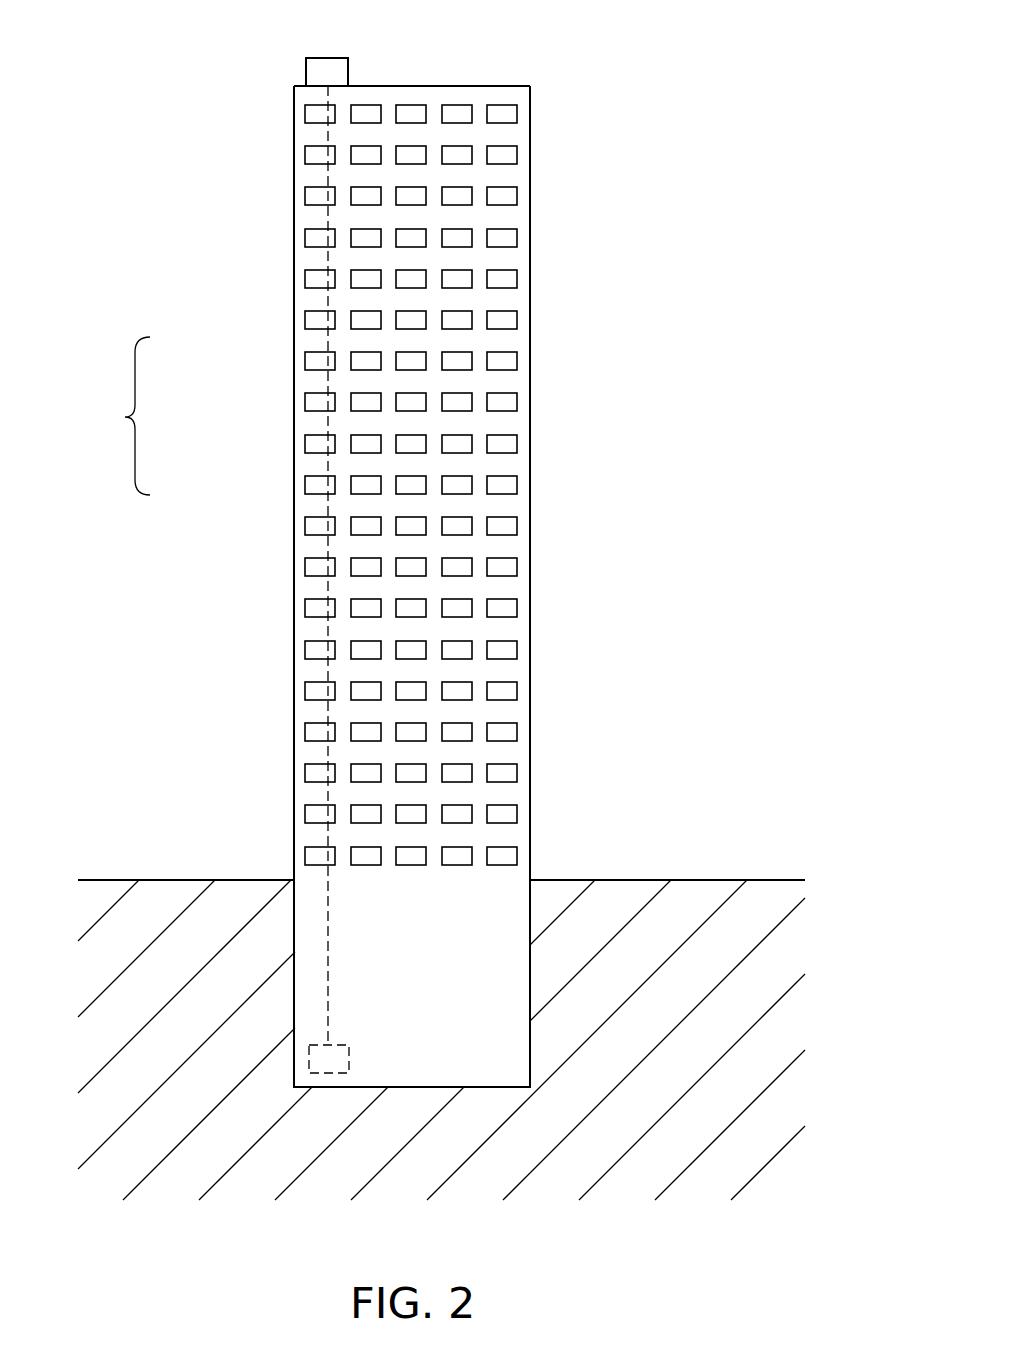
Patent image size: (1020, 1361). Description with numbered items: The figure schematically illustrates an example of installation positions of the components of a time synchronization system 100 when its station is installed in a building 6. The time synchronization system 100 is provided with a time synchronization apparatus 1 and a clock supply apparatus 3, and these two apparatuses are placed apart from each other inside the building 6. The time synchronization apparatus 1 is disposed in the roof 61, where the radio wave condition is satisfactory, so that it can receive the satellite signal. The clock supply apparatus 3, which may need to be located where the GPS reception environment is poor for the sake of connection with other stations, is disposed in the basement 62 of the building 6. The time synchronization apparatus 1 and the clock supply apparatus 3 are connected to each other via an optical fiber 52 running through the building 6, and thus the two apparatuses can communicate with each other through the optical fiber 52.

The time synchronization system 100 is at (116, 416).
The time synchronization apparatus 1 is at (306, 72).
The optical fiber 52 is at (333, 382).
The clock supply apparatus 3 is at (312, 1056).
The building 6 is at (540, 128).
The roof 61 is at (440, 86).
The basement 62 is at (352, 1057).